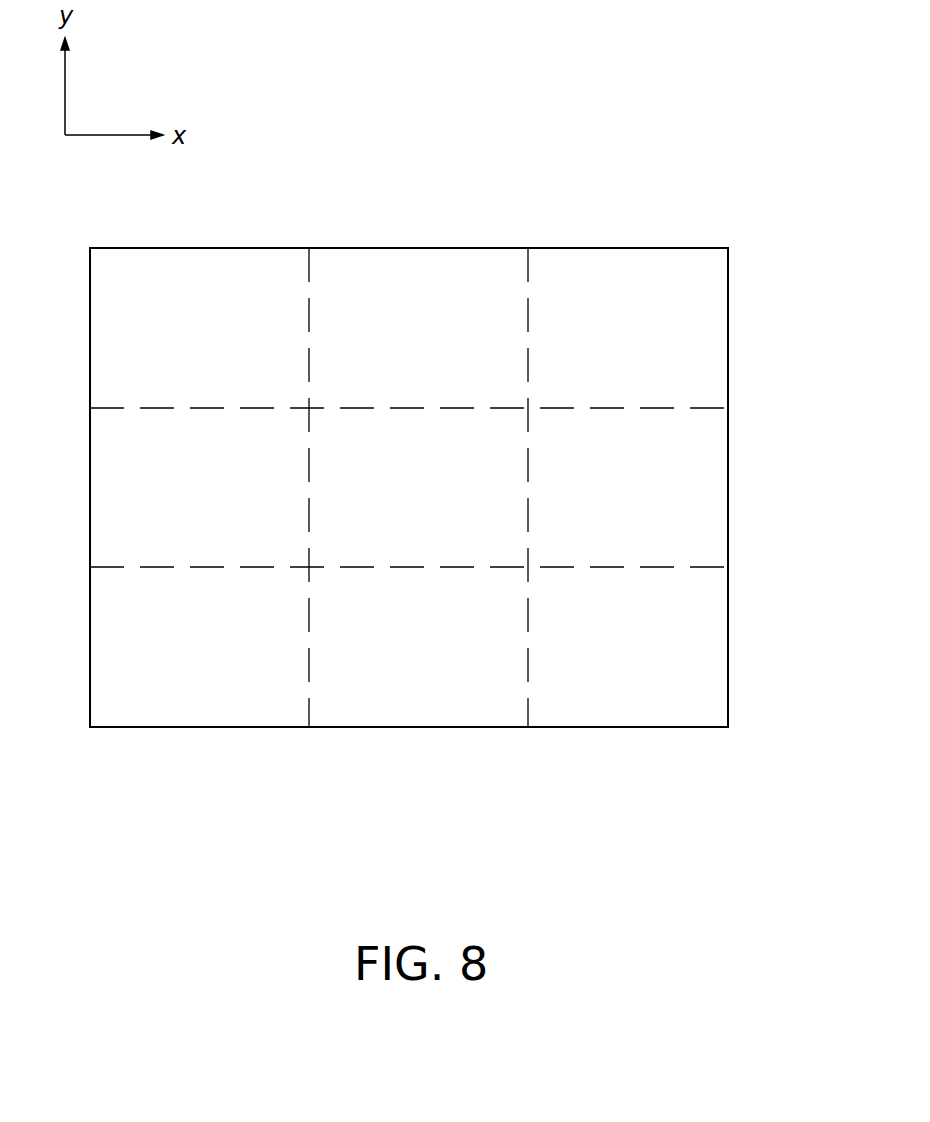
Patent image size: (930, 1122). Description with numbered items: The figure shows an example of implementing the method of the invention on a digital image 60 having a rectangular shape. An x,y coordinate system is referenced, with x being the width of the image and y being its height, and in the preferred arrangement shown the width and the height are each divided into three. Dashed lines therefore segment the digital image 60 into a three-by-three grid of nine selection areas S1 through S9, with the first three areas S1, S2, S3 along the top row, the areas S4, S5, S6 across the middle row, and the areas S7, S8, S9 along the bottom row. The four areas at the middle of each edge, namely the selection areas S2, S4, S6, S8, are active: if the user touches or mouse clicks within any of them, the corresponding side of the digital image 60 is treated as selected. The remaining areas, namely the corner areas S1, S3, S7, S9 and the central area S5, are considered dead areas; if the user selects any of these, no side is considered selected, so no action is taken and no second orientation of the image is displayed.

The digital image 60 is at (730, 249).
The selection area S1 is at (210, 265).
The selection area S2 is at (387, 262).
The selection area S3 is at (605, 262).
The selection area S4 is at (106, 480).
The selection area S5 is at (359, 550).
The selection area S6 is at (700, 476).
The selection area S7 is at (204, 710).
The selection area S8 is at (492, 708).
The selection area S9 is at (700, 696).